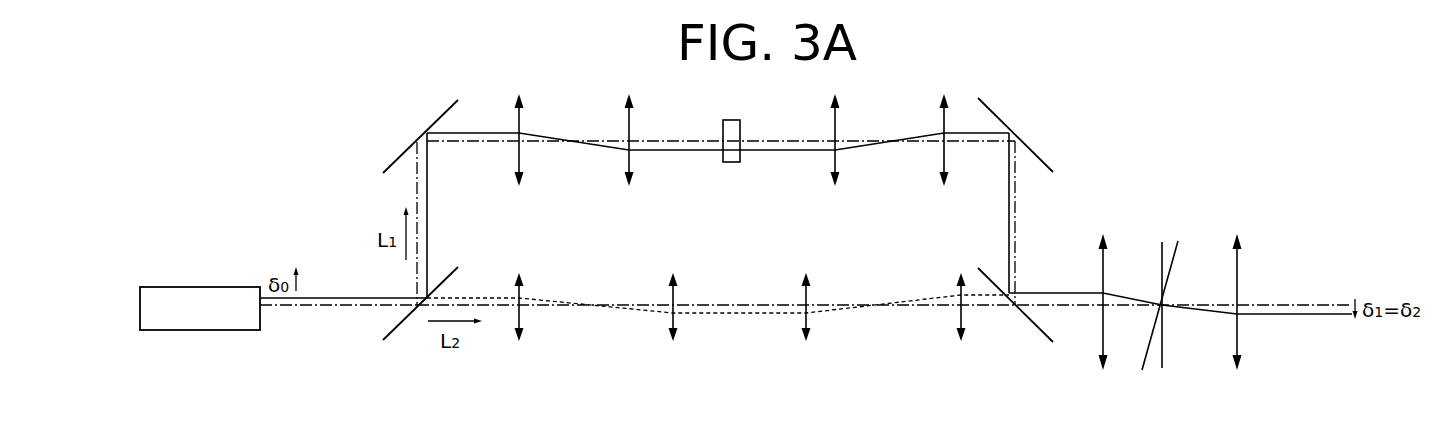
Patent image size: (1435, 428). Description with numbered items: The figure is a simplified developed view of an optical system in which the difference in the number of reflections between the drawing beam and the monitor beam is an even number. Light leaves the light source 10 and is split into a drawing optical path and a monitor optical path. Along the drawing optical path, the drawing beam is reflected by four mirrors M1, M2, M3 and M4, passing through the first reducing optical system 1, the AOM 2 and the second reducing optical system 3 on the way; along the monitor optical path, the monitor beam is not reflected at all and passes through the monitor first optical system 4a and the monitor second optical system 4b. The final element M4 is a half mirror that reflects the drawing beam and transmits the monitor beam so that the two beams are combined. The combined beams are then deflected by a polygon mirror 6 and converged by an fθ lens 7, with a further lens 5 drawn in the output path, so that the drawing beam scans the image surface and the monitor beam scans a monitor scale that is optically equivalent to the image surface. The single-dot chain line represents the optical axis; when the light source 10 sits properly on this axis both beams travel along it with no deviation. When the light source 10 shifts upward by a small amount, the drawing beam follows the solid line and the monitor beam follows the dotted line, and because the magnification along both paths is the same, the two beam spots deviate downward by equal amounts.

The first reducing optical system 1 is at (510, 186).
The AOM 2 is at (730, 163).
The second reducing optical system 3 is at (827, 186).
The monitor first optical system 4a is at (508, 343).
The monitor second optical system 4b is at (798, 343).
The lens 5 is at (1103, 372).
The polygon mirror 6 is at (1155, 373).
The fθ lens 7 is at (1237, 372).
The light source 10 is at (227, 326).
The mirror M1 is at (394, 332).
The mirror M2 is at (388, 163).
The mirror M3 is at (1046, 162).
The half mirror M4 is at (1037, 330).